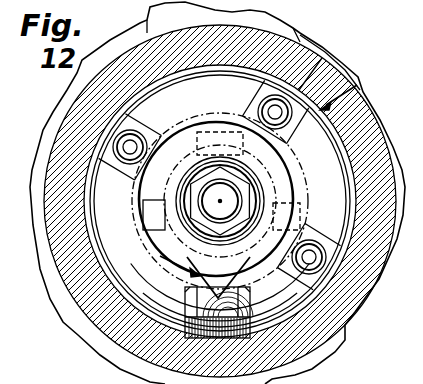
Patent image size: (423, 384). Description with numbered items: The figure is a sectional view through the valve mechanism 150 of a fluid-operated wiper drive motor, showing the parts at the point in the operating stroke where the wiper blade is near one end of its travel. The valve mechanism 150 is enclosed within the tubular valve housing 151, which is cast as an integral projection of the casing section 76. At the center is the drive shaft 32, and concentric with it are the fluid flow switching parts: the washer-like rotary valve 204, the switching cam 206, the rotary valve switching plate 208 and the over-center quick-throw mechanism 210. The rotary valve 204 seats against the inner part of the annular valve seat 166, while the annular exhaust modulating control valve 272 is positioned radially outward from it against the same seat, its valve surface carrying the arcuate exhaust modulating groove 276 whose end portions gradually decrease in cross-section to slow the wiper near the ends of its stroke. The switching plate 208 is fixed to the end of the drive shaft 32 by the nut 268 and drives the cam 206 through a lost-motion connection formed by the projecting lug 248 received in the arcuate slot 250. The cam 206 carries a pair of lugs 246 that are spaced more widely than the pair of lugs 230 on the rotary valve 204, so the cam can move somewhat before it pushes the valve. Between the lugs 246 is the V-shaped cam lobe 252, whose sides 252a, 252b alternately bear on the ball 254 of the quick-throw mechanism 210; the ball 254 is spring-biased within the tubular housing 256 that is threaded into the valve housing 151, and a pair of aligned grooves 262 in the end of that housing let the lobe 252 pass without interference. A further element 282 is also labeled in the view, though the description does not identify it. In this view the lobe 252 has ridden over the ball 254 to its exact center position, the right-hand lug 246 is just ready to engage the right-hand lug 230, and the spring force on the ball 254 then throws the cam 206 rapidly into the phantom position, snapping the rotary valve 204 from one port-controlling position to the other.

The drive shaft 32 is at (262, 183).
The casing section 76 is at (345, 341).
The valve mechanism 150 is at (64, 320).
The valve housing 151 is at (360, 305).
The annular valve seat 166 is at (323, 55).
The rotary valve 204 is at (152, 233).
The switching cam 206 is at (312, 272).
The rotary valve switching plate 208 is at (366, 78).
The over-center quick-throw mechanism 210 is at (96, 349).
The lugs 230 is at (165, 262).
The lugs 246 is at (148, 197).
The projecting lug 248 is at (200, 108).
The arcuate slot 250 is at (206, 112).
The cam lobe 252 is at (256, 338).
The side of the cam lobe 252a is at (195, 283).
The other side of the cam lobe 252b is at (280, 311).
The ball 254 is at (203, 340).
The tubular housing 256 is at (113, 357).
The grooves 262 is at (135, 306).
The nut 268 is at (240, 170).
The exhaust modulating control valve 272 is at (90, 252).
The exhaust modulating groove 276 is at (411, 274).
The pin 282 is at (128, 146).